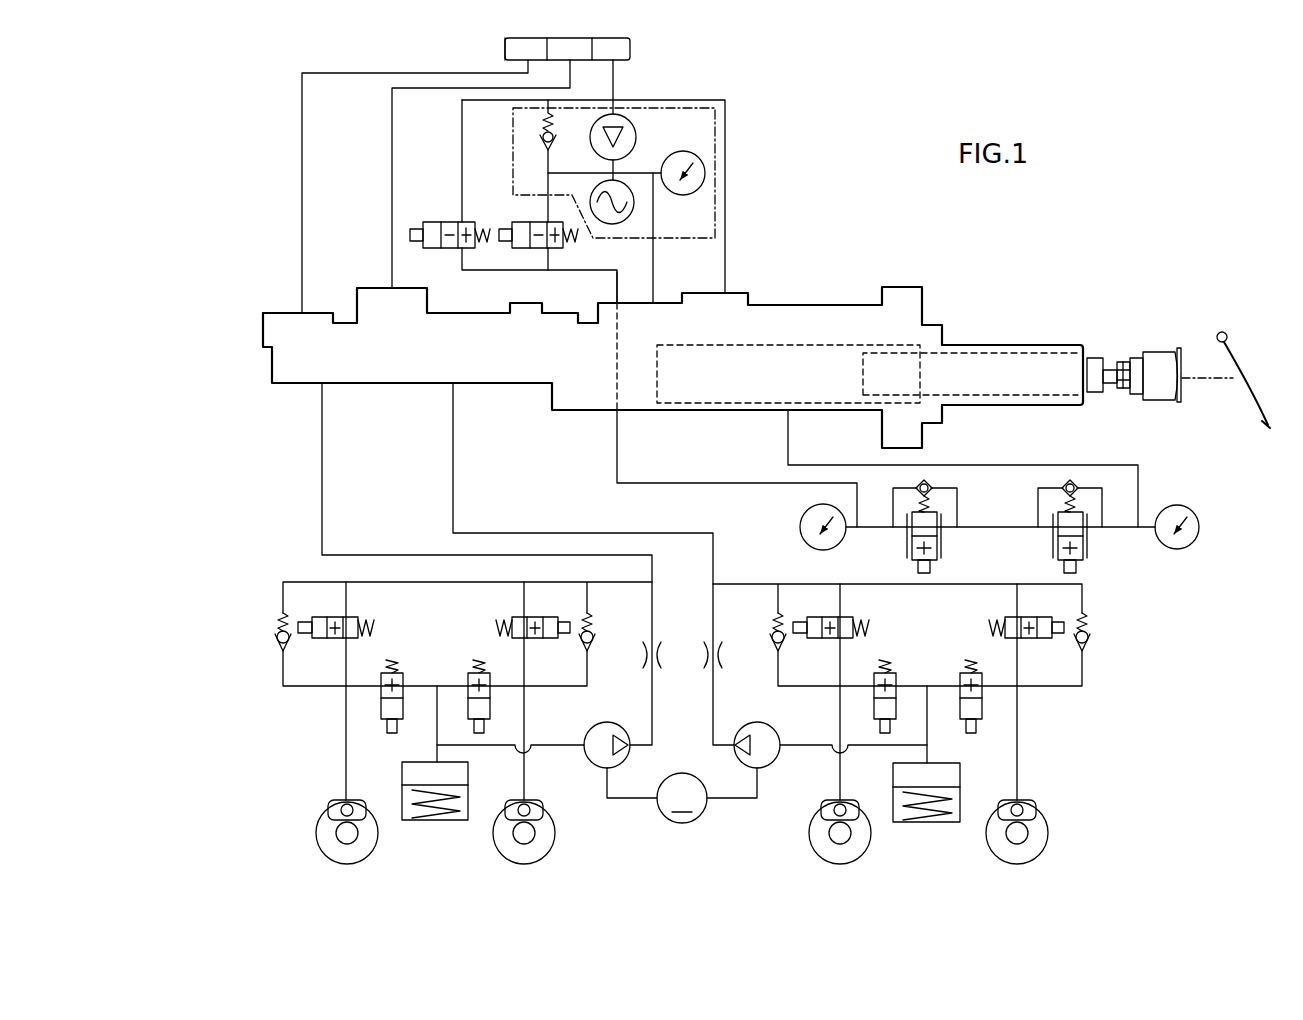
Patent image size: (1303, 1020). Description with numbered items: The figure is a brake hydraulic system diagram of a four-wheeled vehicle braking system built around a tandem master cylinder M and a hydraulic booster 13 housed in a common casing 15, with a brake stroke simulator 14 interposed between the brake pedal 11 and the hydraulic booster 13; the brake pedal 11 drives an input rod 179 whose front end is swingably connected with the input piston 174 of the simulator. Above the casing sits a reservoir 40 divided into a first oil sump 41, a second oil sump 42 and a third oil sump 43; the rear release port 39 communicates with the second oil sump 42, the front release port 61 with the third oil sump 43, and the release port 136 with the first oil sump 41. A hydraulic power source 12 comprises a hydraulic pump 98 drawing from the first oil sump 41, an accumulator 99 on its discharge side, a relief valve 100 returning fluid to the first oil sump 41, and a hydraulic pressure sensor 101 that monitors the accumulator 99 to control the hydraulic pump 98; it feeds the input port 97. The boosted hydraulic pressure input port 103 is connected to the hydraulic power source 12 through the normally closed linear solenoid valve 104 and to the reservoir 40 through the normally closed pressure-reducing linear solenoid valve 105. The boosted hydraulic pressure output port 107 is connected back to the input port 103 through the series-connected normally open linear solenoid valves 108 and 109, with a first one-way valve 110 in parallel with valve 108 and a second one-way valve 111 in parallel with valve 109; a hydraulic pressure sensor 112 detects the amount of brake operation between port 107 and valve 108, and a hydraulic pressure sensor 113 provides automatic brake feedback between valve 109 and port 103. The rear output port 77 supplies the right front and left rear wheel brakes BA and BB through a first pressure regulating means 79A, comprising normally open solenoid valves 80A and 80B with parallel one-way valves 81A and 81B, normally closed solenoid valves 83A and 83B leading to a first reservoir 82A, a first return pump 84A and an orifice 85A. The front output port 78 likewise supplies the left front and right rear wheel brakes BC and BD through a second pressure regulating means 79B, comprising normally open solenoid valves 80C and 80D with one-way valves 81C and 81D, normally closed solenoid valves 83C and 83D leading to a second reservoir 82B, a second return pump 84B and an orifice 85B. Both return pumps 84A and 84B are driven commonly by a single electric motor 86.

The brake pedal 11 is at (1267, 412).
The hydraulic power source 12 is at (715, 127).
The hydraulic booster 13 is at (771, 338).
The brake stroke simulator 14 is at (970, 343).
The casing 15 is at (547, 363).
The rear release port 39 is at (387, 287).
The reservoir 40 is at (629, 61).
The first oil sump 41 is at (627, 45).
The second oil sump 42 is at (571, 49).
The third oil sump 43 is at (507, 44).
The front release port 61 is at (290, 305).
The rear output port 77 is at (453, 385).
The front output port 78 is at (322, 385).
The first pressure regulating means 79A is at (1040, 695).
The second pressure regulating means 79B is at (314, 690).
The normally open solenoid valve 80A is at (855, 602).
The normally open solenoid valve 80B is at (1007, 619).
The normally open solenoid valve 80C is at (352, 617).
The normally open solenoid valve 80D is at (513, 617).
The one-way valve 81A is at (772, 637).
The one-way valve 81B is at (1089, 638).
The one-way valve 81C is at (277, 637).
The one-way valve 81D is at (593, 637).
The first reservoir 82A is at (923, 822).
The second reservoir 82B is at (433, 820).
The normally closed solenoid valve 83A is at (898, 678).
The normally closed solenoid valve 83B is at (983, 717).
The normally closed solenoid valve 83C is at (378, 712).
The normally closed solenoid valve 83D is at (467, 673).
The first return pump 84A is at (763, 722).
The second return pump 84B is at (610, 722).
The orifice 85A is at (722, 657).
The orifice 85B is at (663, 658).
The electric motor 86 is at (703, 813).
The input port 97 is at (655, 303).
The hydraulic pump 98 is at (636, 148).
The accumulator 99 is at (634, 207).
The relief valve 100 is at (542, 137).
The hydraulic pressure sensor 101 is at (705, 175).
The boosted hydraulic pressure input port 103 is at (615, 303).
The normally closed linear solenoid valve for automatic brake pressurization 104 is at (563, 248).
The normally closed pressure-reducing linear solenoid valve for regeneration and coo 105 is at (435, 222).
The boosted hydraulic pressure output port 107 is at (788, 410).
The normally open linear solenoid valve for automatic brake depressurization 108 is at (1083, 561).
The normally open pressurizing linear solenoid valve for regeneration and coordinati 109 is at (937, 540).
The first one-way valve 110 is at (1064, 485).
The second one-way valve 111 is at (931, 482).
The hydraulic pressure sensor for detecting the amount of brake operation 112 is at (1180, 504).
The hydraulic pressure sensor for automatic brake feedback control 113 is at (800, 527).
The release port 136 is at (725, 292).
The input piston 174 is at (1093, 358).
The input rod 179 is at (1165, 352).
The tandem master cylinder M is at (270, 388).
The right front wheel brake BA is at (875, 837).
The left rear wheel brake BB is at (1052, 827).
The left front wheel brake BC is at (314, 833).
The right rear wheel brake BD is at (556, 845).